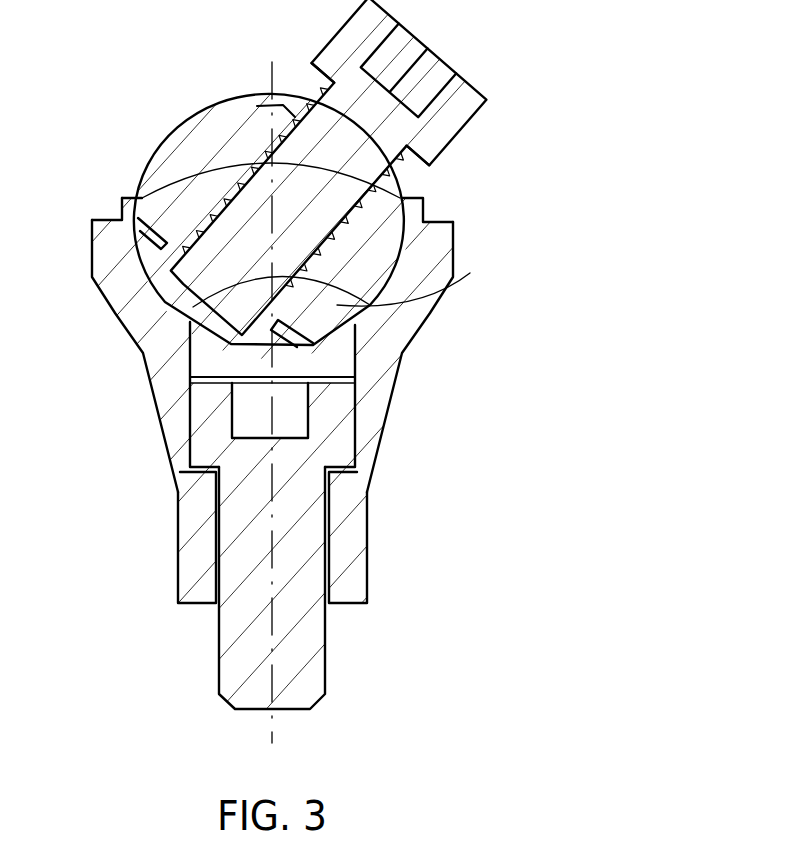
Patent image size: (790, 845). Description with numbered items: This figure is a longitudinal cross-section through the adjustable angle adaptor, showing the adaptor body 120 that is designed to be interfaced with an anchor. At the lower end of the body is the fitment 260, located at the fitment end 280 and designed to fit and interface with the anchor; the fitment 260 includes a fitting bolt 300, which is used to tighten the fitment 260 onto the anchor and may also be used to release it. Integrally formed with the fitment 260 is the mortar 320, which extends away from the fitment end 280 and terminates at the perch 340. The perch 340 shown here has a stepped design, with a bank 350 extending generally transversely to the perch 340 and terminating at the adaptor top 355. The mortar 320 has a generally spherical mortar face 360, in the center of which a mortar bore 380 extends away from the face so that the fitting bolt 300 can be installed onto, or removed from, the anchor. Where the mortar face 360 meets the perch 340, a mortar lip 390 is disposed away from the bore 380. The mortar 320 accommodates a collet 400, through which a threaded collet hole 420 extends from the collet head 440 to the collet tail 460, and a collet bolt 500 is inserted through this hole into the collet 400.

The adaptor body 120 is at (124, 414).
The fitment 260 is at (368, 546).
The fitment end 280 is at (190, 604).
The fitting bolt 300 is at (250, 502).
The mortar 320 is at (100, 295).
The perch 340 is at (103, 220).
The bank 350 is at (427, 205).
The adaptor top 355 is at (130, 198).
The mortar face 360 is at (452, 291).
The mortar bore 380 is at (312, 382).
The mortar lip 390 is at (400, 197).
The collet 400 is at (207, 147).
The threaded collet hole 420 is at (210, 326).
The collet head 440 is at (313, 97).
The collet tail 460 is at (262, 357).
The collet bolt 500 is at (370, 144).